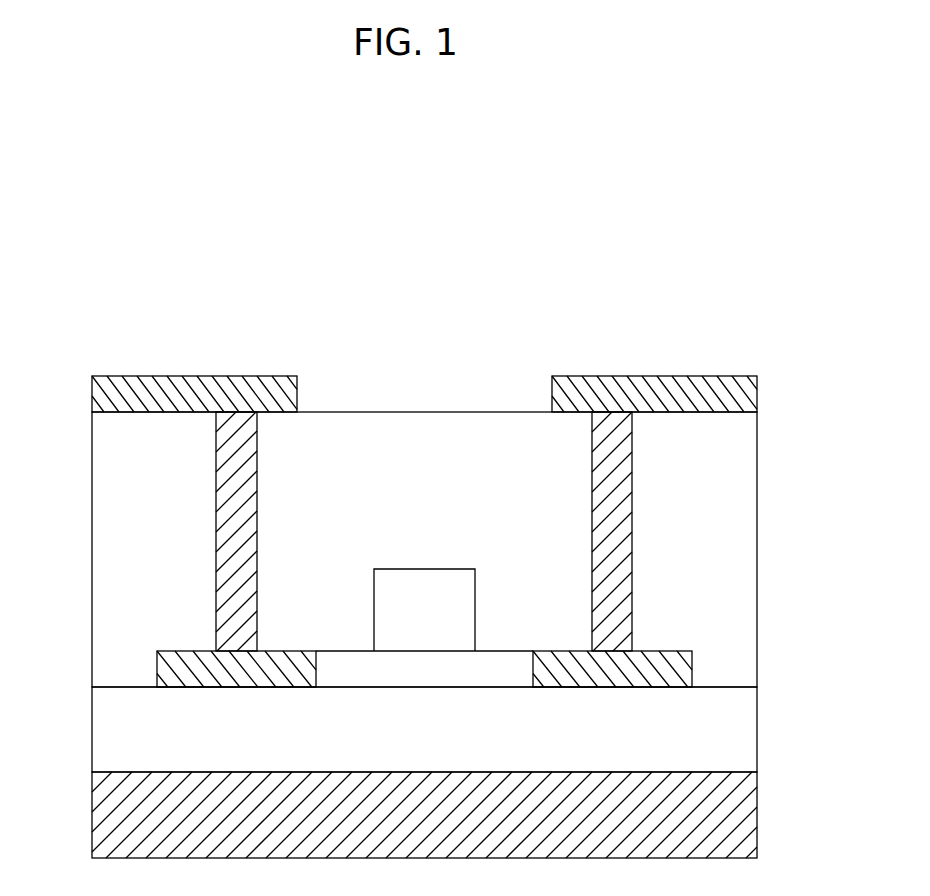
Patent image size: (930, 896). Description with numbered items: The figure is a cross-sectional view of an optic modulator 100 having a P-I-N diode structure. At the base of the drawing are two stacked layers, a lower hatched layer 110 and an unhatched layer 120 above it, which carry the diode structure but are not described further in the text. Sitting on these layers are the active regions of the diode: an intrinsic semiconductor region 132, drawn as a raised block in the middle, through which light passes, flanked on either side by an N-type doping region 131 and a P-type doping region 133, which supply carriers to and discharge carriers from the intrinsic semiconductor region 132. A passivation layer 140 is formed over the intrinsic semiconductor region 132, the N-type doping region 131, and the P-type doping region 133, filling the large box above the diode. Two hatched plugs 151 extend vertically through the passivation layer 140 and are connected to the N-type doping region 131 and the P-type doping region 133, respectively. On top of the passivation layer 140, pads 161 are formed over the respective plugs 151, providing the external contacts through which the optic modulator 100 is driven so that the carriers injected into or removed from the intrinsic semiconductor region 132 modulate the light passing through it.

The optic modulator 100 is at (710, 315).
The substrate 110 is at (735, 818).
The buffer layer 120 is at (737, 733).
The N-type doping region 131 is at (668, 670).
The intrinsic semiconductor region 132 is at (448, 612).
The P-type doping region 133 is at (162, 663).
The passivation layer 140 is at (735, 490).
The plugs 151 is at (610, 452).
The pads 161 is at (740, 393).